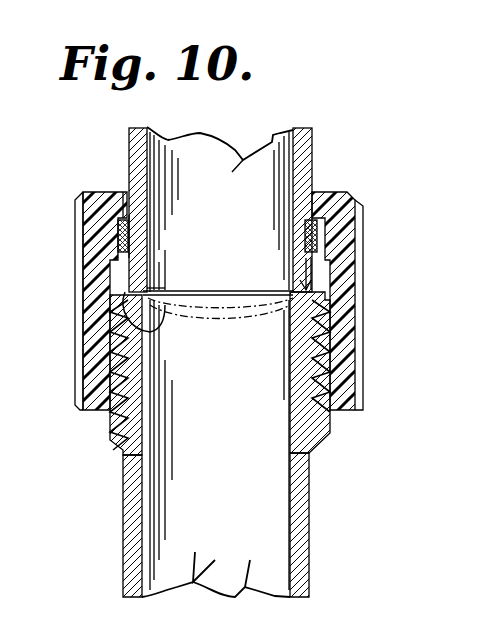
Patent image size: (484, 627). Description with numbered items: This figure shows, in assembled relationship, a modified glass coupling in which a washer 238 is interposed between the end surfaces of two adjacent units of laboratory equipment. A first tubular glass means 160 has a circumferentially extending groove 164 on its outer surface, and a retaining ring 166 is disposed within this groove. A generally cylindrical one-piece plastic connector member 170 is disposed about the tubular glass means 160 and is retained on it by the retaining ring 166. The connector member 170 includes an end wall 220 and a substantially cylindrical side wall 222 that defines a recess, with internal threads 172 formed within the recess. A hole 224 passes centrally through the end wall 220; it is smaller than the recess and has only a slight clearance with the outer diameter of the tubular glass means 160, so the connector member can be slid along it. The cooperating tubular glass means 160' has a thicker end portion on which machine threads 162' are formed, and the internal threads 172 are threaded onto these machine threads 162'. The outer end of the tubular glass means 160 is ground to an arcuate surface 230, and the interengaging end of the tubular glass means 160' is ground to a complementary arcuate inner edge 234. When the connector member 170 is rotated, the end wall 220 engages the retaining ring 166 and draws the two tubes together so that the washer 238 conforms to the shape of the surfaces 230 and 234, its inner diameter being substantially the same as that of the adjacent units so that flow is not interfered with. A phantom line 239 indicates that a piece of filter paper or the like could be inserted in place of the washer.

The tubular glass means 160 is at (256, 197).
The tubular glass means 160' is at (255, 448).
The machine threads 162' is at (258, 373).
The groove 164 is at (132, 230).
The retaining ring 166 is at (118, 240).
The connector member 170 is at (366, 279).
The internal threads 172 is at (325, 359).
The end wall 220 is at (327, 192).
The side wall 222 is at (355, 330).
The hole 224 is at (312, 212).
The arcuate surface 230 is at (300, 292).
The arcuate inner edge 234 is at (135, 318).
The washer 238 is at (150, 284).
The phantom line 239 is at (200, 322).